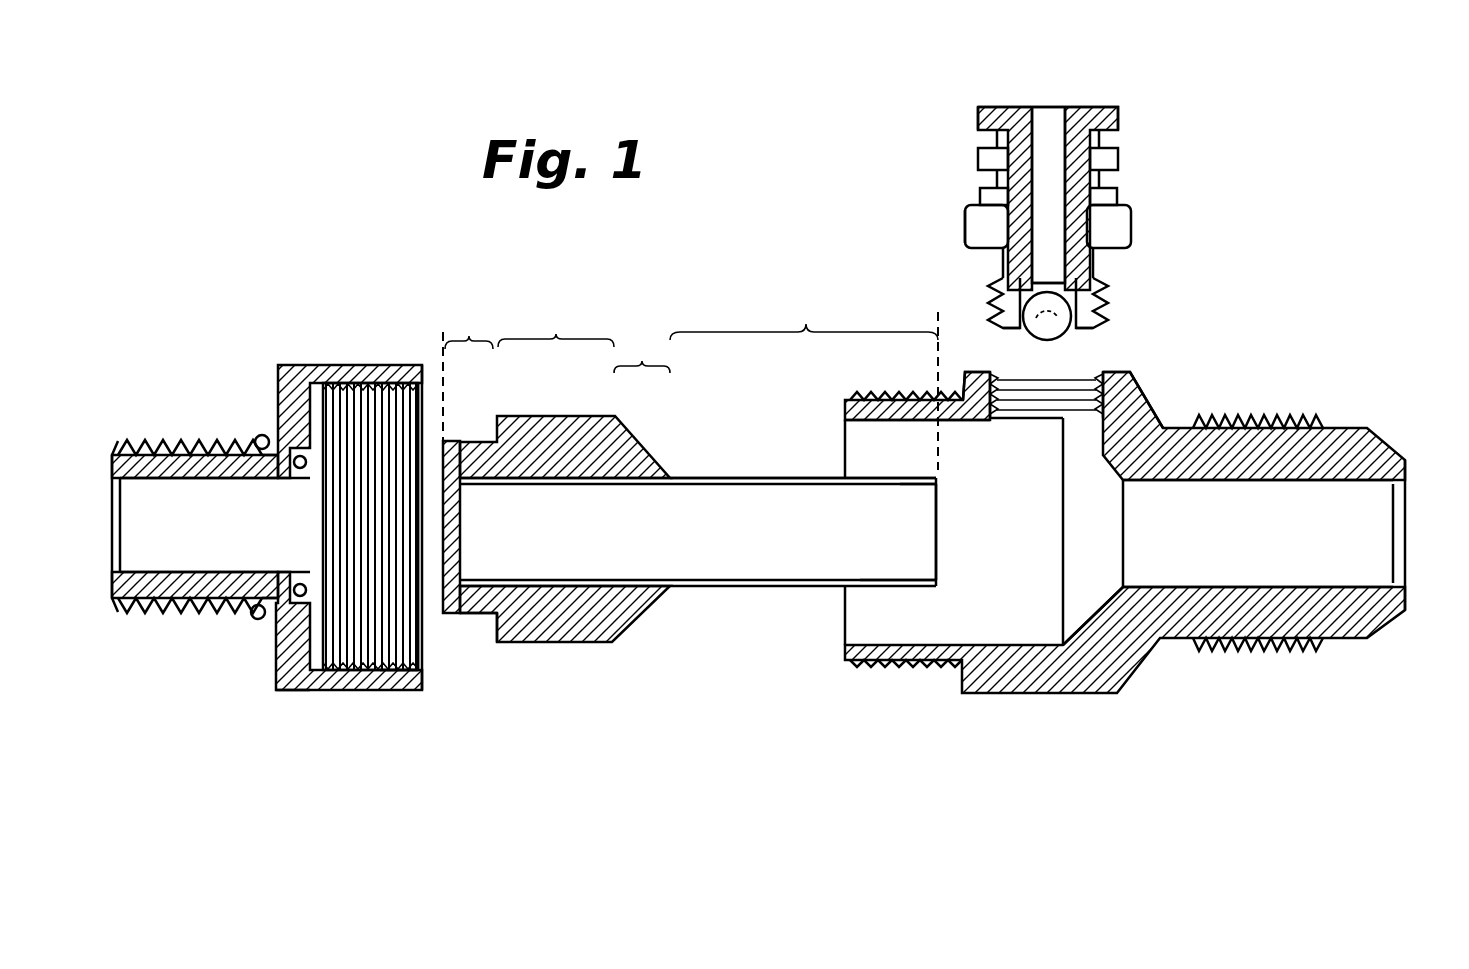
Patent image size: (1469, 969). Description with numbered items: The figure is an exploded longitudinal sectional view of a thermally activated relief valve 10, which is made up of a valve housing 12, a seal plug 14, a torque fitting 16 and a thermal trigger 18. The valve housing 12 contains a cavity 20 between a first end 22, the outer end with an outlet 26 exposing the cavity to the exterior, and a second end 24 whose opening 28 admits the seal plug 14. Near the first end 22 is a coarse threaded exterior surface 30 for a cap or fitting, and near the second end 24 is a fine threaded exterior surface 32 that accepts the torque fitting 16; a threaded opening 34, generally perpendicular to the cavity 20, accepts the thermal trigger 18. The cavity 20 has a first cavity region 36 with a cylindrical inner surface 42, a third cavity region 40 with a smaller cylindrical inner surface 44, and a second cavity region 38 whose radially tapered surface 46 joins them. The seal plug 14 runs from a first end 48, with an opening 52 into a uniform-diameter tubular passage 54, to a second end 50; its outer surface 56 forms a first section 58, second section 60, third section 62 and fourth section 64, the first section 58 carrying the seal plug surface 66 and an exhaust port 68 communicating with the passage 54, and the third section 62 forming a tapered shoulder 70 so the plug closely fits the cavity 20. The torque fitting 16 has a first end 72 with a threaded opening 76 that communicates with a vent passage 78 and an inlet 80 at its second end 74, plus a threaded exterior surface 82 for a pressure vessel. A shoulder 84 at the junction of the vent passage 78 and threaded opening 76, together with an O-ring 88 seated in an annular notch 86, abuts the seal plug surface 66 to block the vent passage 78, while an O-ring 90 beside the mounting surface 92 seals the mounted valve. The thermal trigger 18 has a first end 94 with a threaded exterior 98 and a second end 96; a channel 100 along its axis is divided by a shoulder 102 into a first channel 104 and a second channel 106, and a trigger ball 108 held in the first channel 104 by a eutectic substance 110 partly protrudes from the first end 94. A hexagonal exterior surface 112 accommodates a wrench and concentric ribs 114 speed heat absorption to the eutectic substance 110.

The thermally activated relief valve 10 is at (738, 692).
The valve housing 12 is at (1105, 695).
The seal plug 14 is at (733, 590).
The torque fitting 16 is at (285, 693).
The thermal trigger 18 is at (1137, 228).
The cavity 20 is at (1038, 594).
The first end 22 is at (1405, 560).
The second end 24 is at (843, 632).
The outlet 26 is at (1400, 510).
The opening 28 is at (845, 412).
The coarse threaded exterior surface 30 is at (1315, 652).
The fine threaded exterior surface 32 is at (848, 665).
The threaded opening 34 is at (1012, 420).
The first cavity region 36 is at (958, 398).
The second cavity region 38 is at (1132, 388).
The third cavity region 40 is at (1350, 430).
The cylindrical inner surface 42 is at (866, 420).
The cylindrical inner surface 44 is at (1222, 484).
The radially tapered surface 46 is at (1090, 600).
The first end 48 is at (940, 550).
The second end 50 is at (480, 600).
The opening 52 is at (935, 500).
The tubular passage 54 is at (877, 555).
The outer surface 56 is at (745, 476).
The first section 58 is at (469, 327).
The second section 60 is at (556, 322).
The third section 62 is at (642, 349).
The fourth section 64 is at (804, 314).
The seal plug surface 66 is at (452, 518).
The exhaust port 68 is at (488, 597).
The tapered shoulder 70 is at (640, 617).
The first end 72 is at (410, 640).
The second end 74 is at (113, 580).
The threaded opening 76 is at (428, 410).
The vent passage 78 is at (176, 565).
The inlet 80 is at (110, 500).
The threaded exterior surface 82 is at (212, 440).
The shoulder 84 is at (313, 381).
The annular notch 86 is at (297, 452).
The O-ring 88 is at (300, 582).
The O-ring 90 is at (263, 436).
The mounting surface 92 is at (270, 675).
The first end 94 is at (1103, 335).
The second end 96 is at (1077, 105).
The threaded exterior 98 is at (1107, 283).
The channel 100 is at (1093, 175).
The shoulder 102 is at (993, 302).
The first channel 104 is at (1040, 336).
The second channel 106 is at (1017, 170).
The trigger ball 108 is at (1062, 336).
The eutectic substance 110 is at (1050, 133).
The hexagonal exterior surface 112 is at (966, 227).
The concentric ribs 114 is at (1120, 113).